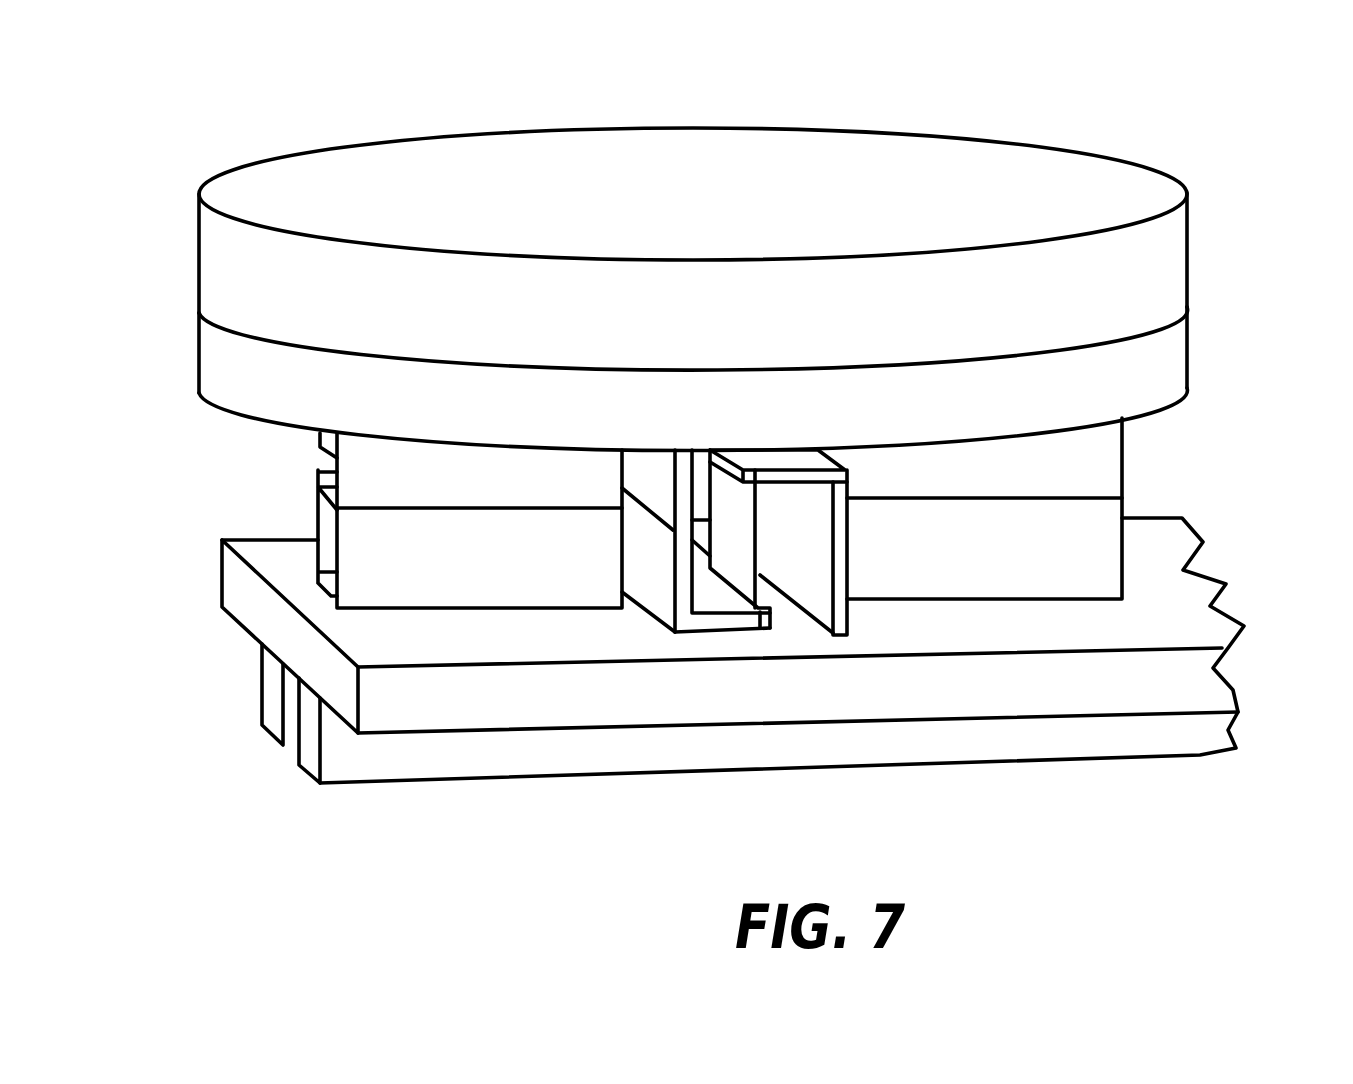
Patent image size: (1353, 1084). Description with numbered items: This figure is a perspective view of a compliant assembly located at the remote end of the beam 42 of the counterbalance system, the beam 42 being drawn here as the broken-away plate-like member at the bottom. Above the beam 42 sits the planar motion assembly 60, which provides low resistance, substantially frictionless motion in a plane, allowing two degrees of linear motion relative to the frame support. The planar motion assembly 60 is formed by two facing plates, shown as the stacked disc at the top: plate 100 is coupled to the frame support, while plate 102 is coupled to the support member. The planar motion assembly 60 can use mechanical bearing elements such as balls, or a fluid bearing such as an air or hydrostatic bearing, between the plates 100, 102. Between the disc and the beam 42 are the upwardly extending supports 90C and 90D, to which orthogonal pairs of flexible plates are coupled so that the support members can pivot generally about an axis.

The planar motion assembly 60 is at (1229, 183).
The plate 100 is at (199, 264).
The plate 102 is at (193, 347).
The upwardly extending support 90C is at (353, 554).
The upwardly extending support 90D is at (1080, 548).
The beam 42 is at (970, 690).